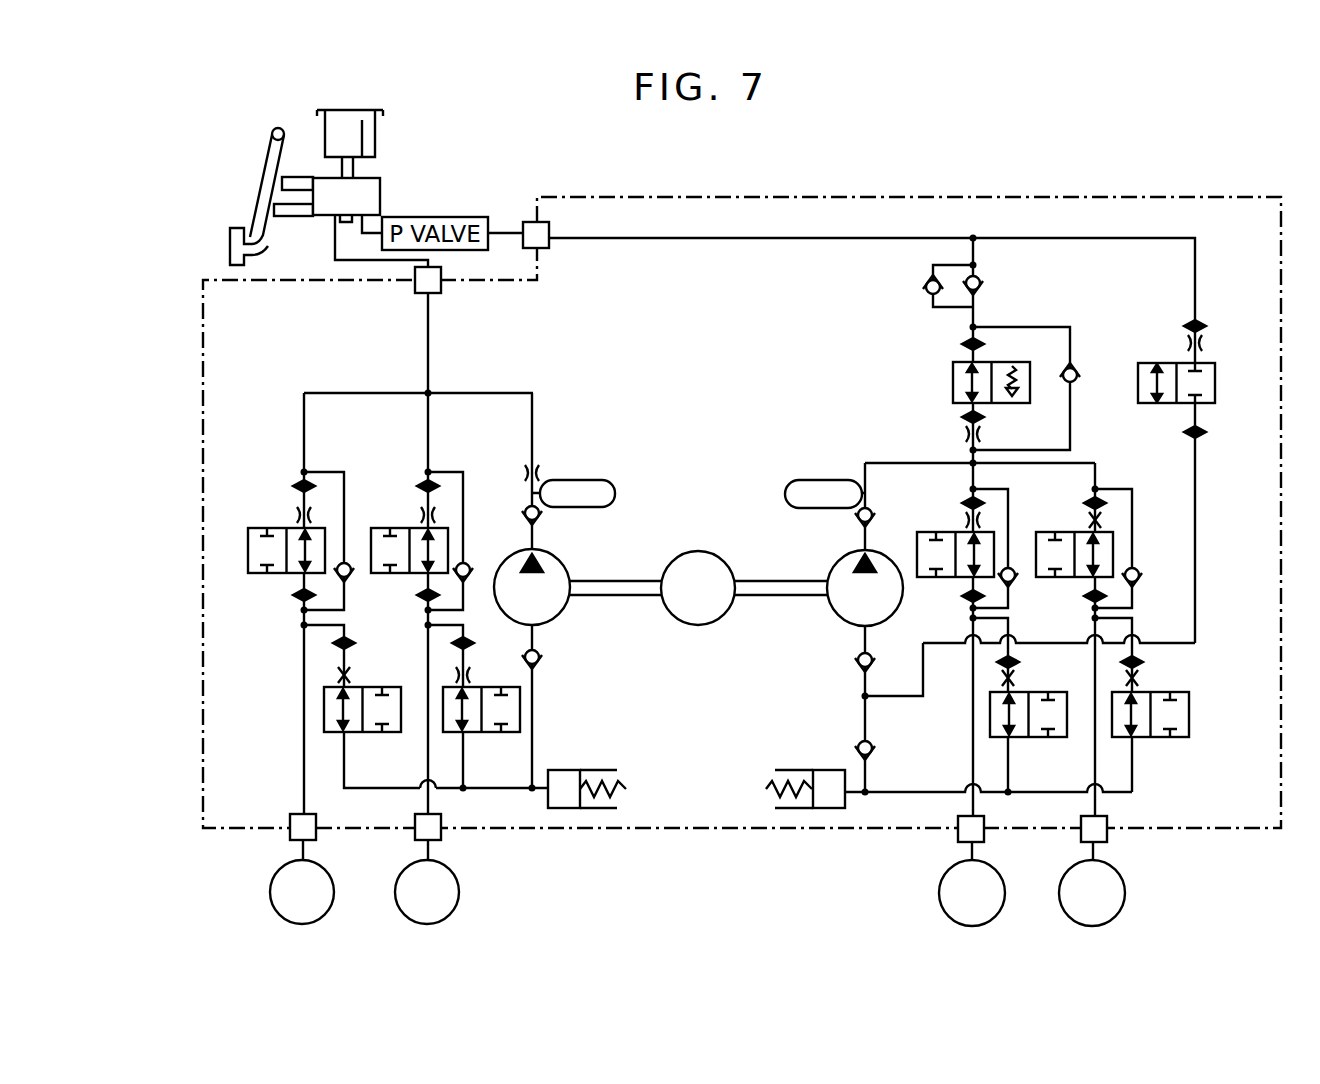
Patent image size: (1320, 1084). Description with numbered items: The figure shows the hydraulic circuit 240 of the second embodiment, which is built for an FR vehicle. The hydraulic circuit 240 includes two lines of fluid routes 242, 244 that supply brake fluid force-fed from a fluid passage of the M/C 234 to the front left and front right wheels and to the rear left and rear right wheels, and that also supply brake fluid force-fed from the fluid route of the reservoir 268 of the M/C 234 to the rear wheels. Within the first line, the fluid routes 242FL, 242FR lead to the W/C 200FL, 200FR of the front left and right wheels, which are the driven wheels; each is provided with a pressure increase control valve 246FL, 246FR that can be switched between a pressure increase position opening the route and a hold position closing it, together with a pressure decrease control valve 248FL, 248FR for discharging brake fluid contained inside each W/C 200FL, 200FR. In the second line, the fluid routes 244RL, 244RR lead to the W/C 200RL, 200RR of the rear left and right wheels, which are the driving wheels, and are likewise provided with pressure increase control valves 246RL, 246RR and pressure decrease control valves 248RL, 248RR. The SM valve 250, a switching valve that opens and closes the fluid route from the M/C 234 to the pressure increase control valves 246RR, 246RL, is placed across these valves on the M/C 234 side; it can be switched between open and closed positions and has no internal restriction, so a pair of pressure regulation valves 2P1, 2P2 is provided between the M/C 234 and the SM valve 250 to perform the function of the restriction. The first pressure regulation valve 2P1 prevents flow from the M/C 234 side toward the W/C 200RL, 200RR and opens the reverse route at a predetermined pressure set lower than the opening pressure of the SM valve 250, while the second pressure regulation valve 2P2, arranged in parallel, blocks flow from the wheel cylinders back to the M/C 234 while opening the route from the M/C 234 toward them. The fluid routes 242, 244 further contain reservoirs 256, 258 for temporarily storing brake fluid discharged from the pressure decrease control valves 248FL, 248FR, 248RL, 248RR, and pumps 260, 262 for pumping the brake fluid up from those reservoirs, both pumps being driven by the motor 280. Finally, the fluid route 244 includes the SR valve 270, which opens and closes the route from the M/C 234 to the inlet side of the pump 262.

The hydraulic circuit 240 is at (1212, 193).
The M/C 234 is at (380, 190).
The reservoir 268 is at (375, 127).
The fluid route 242 is at (552, 425).
The fluid route 242FR is at (304, 425).
The fluid route 242FL is at (428, 425).
The pressure increase control valve 246FR is at (252, 528).
The pressure increase control valve 246FL is at (396, 528).
The pressure decrease control valve 248FR is at (324, 713).
The pressure decrease control valve 248FL is at (520, 713).
The pump 260 is at (560, 560).
The motor 280 is at (686, 552).
The pump 262 is at (842, 562).
The reservoir 256 is at (562, 770).
The reservoir 258 is at (775, 770).
The fluid route 244 is at (1103, 350).
The first pressure regulation valve 2P1 is at (982, 284).
The second pressure regulation valve 2P2 is at (924, 286).
The SM valve 250 is at (953, 366).
The SR valve 270 is at (1215, 370).
The fluid route 244RR is at (972, 480).
The fluid route 244RL is at (1096, 480).
The pressure increase control valve 246RR is at (915, 532).
The pressure increase control valve 246RL is at (1040, 530).
The pressure decrease control valve 248RR is at (990, 715).
The pressure decrease control valve 248RL is at (1160, 692).
The W/C 200FR is at (272, 882).
The W/C 200FL is at (457, 882).
The W/C 200RR is at (945, 882).
The W/C 200RL is at (1120, 882).